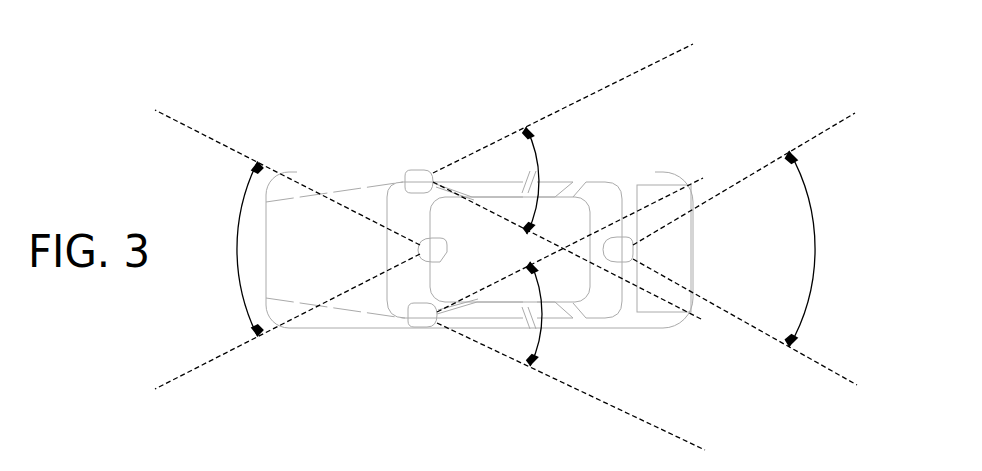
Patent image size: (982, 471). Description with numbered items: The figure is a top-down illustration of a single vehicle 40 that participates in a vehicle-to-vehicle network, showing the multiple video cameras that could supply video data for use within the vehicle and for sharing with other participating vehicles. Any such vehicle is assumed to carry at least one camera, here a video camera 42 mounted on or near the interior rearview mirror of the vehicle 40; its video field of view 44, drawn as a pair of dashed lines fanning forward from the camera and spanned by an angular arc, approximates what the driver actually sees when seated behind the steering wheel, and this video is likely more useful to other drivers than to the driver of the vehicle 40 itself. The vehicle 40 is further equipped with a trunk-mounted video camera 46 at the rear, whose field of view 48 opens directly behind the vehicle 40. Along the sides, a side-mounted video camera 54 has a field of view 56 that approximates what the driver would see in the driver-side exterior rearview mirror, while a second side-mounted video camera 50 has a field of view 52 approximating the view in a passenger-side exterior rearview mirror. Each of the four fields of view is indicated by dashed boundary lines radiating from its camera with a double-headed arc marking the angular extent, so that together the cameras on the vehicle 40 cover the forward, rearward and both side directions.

The vehicle 40 is at (293, 172).
The video camera 42 is at (447, 242).
The video field of view 44 is at (240, 228).
The trunk-mounted video camera 46 is at (633, 249).
The field of view 48 is at (816, 248).
The second side-mounted video camera 50 is at (422, 170).
The field of view 52 is at (537, 163).
The side-mounted video camera 54 is at (420, 328).
The field of view 56 is at (543, 333).